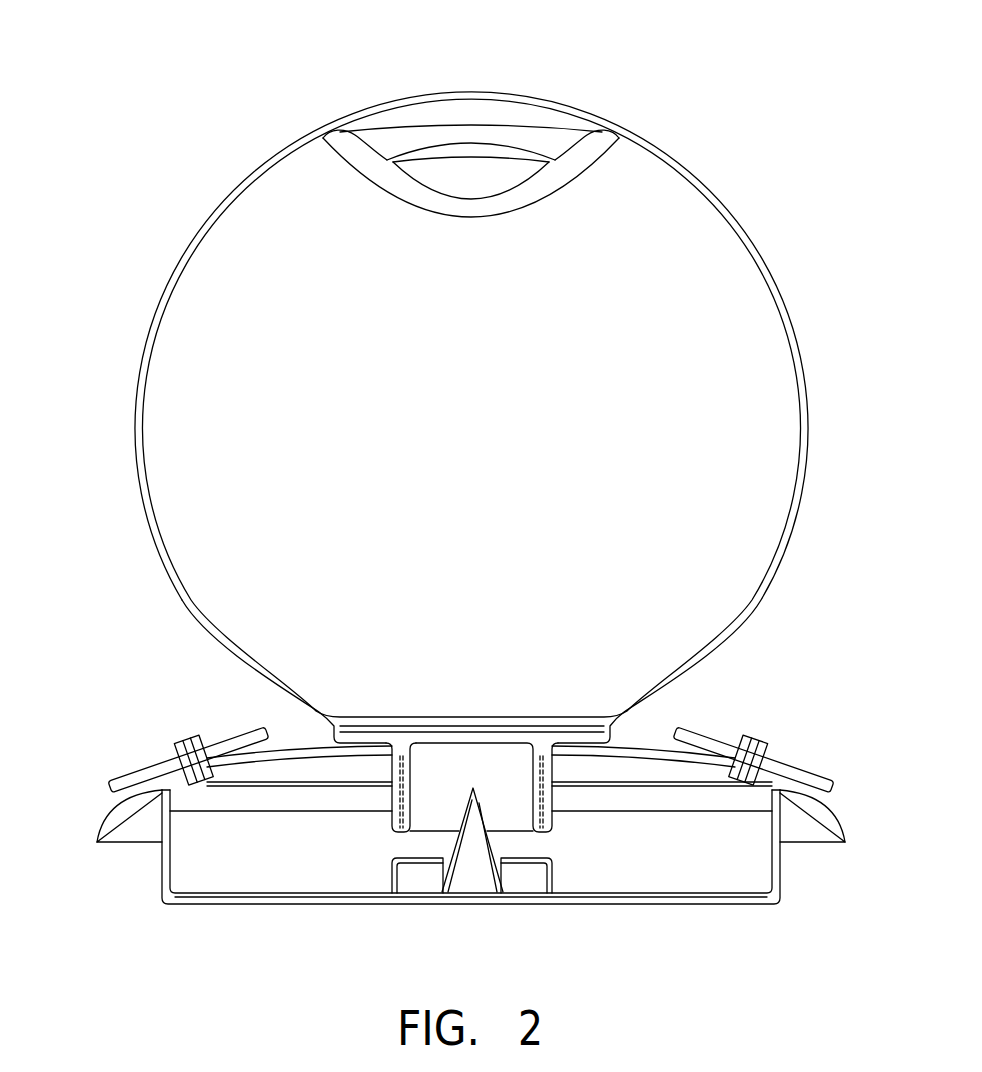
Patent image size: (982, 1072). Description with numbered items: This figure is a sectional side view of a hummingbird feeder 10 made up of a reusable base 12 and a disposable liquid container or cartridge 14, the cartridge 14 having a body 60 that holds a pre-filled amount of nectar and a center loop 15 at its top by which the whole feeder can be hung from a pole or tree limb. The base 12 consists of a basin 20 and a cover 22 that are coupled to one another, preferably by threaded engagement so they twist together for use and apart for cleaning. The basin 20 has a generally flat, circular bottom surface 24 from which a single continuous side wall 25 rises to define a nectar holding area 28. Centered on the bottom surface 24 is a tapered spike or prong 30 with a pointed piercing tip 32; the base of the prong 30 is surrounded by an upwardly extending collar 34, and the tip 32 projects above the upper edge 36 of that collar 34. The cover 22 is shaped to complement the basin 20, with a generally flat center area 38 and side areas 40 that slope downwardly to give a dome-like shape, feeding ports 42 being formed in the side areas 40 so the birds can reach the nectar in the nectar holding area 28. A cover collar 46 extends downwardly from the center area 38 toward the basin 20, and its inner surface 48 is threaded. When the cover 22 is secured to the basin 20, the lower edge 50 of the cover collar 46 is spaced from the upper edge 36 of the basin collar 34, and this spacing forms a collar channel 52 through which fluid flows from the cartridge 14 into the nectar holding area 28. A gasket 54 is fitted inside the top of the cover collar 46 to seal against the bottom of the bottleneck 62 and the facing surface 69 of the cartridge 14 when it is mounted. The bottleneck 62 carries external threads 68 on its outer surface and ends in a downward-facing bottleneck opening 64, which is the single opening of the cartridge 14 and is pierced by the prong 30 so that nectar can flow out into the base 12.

The hummingbird feeder 10 is at (745, 165).
The base 12 is at (201, 908).
The cartridge 14 is at (805, 372).
The center loop 15 is at (553, 122).
The basin 20 is at (783, 868).
The cover 22 is at (206, 752).
The bottom surface 24 is at (293, 905).
The side wall 25 is at (160, 868).
The nectar holding area 28 is at (720, 852).
The prong 30 is at (470, 878).
The pointed tip 32 is at (476, 785).
The collar 34 is at (393, 876).
The upper edge 36 is at (553, 858).
The center area 38 is at (315, 746).
The side areas 40 is at (108, 826).
The feeding ports 42 is at (790, 762).
The cover collar 46 is at (550, 780).
The inner surface 48 is at (398, 772).
The lower edge 50 is at (550, 842).
The collar channel 52 is at (386, 844).
The gasket 54 is at (540, 775).
The body 60 is at (458, 423).
The bottleneck 62 is at (502, 850).
The bottleneck opening 64 is at (430, 834).
The external threads 68 is at (535, 787).
The facing surface 69 is at (546, 790).